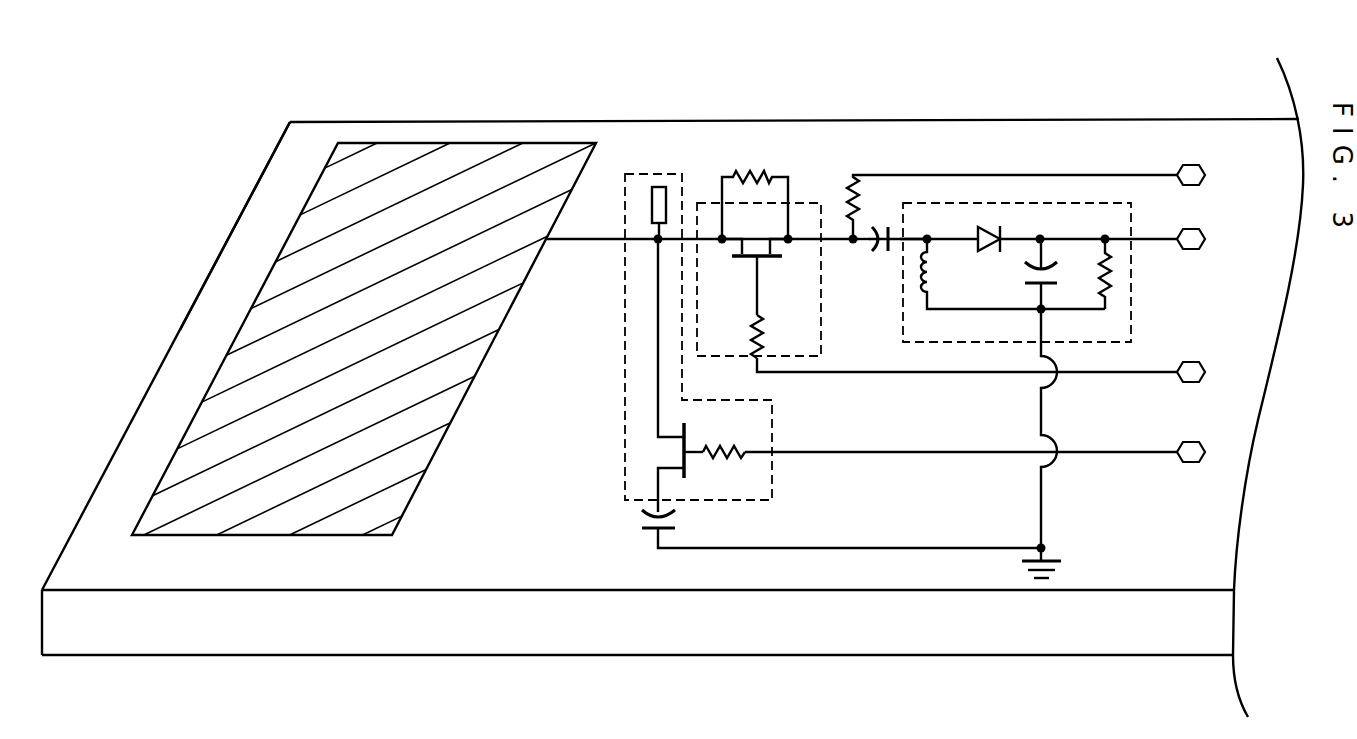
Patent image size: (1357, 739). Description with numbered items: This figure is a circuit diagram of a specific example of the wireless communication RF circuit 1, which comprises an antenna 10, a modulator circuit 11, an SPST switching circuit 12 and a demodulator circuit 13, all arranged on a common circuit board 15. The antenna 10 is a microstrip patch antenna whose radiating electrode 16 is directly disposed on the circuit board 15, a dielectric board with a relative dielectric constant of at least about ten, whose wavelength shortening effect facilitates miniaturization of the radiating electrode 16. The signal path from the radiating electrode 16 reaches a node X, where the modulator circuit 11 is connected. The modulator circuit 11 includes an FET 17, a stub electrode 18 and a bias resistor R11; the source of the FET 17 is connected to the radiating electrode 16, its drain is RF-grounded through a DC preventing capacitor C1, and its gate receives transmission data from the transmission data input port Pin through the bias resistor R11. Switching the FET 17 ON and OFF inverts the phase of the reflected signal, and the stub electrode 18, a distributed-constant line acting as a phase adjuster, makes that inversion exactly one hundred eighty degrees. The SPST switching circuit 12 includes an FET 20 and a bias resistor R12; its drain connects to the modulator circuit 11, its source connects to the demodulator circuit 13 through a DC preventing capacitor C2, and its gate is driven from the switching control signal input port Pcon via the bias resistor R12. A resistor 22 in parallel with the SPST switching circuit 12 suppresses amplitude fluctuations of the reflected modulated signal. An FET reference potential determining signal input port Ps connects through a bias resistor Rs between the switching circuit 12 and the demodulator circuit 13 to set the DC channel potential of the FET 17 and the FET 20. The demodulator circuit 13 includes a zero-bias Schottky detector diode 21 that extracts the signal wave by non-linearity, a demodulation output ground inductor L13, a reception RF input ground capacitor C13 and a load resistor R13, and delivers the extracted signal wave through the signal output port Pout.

The wireless communication RF circuit 1 is at (1023, 103).
The antenna 10 is at (437, 163).
The modulator circuit 11 is at (625, 383).
The SPST switching circuit 12 is at (802, 198).
The demodulator circuit 13 is at (1133, 313).
The circuit board 15 is at (765, 628).
The radiating electrode 16 is at (413, 465).
The FET 17 is at (690, 462).
The stub electrode 18 is at (659, 187).
The FET 20 is at (762, 260).
The diode 21 is at (990, 228).
The resistor 22 is at (742, 177).
The feed point X is at (658, 239).
The bias resistor Rs is at (862, 207).
The DC preventing capacitor C2 is at (870, 250).
The bias resistor R12 is at (765, 330).
The bias resistor R11 is at (725, 447).
The DC preventing capacitor C1 is at (665, 532).
The demodulation output ground inductor L13 is at (940, 287).
The reception RF input ground capacitor C13 is at (1033, 287).
The load resistor R13 is at (1105, 264).
The FET reference potential determining signal input port Ps is at (1205, 172).
The signal output port Pout is at (1205, 236).
The switching control signal input port Pcon is at (1232, 362).
The transmission data input port Pin is at (1232, 441).